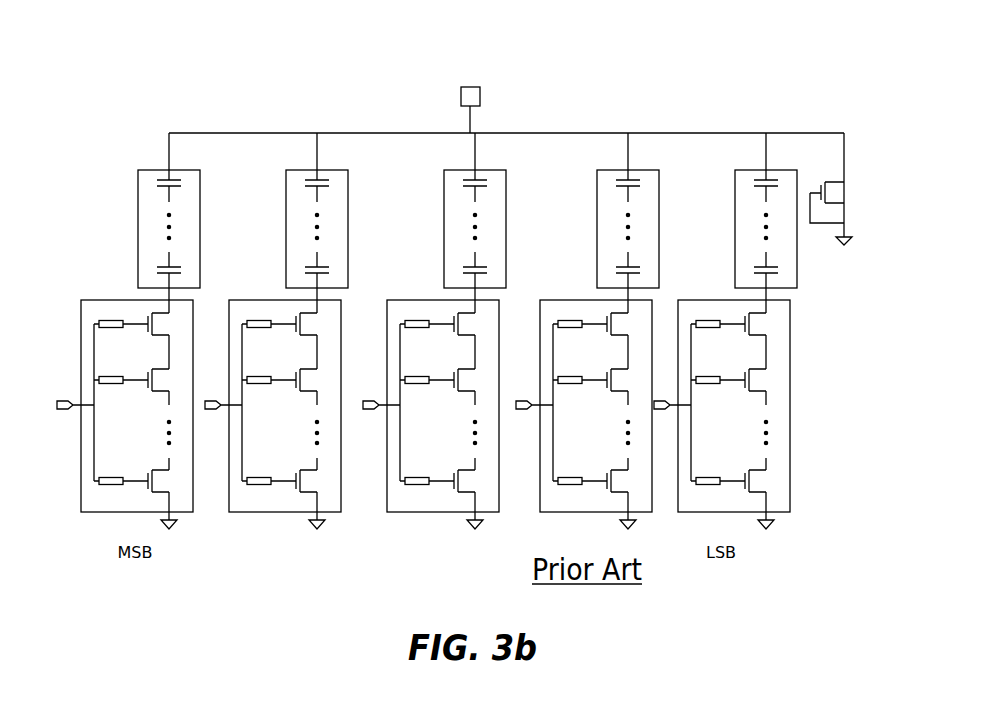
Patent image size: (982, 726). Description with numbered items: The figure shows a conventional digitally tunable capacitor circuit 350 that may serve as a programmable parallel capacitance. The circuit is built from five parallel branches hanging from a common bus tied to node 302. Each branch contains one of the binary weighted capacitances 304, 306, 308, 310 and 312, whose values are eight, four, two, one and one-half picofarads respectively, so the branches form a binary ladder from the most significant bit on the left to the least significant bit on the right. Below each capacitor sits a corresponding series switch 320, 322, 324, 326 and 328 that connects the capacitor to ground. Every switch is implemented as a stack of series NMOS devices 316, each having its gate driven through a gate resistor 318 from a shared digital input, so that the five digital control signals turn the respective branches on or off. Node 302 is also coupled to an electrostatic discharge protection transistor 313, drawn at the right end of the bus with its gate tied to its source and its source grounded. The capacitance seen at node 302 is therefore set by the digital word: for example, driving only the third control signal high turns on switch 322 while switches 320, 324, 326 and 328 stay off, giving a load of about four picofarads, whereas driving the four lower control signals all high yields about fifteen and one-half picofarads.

The node 302 is at (460, 90).
The binary weighted capacitance 304 is at (138, 170).
The binary weighted capacitance 306 is at (286, 170).
The binary weighted capacitance 308 is at (444, 170).
The binary weighted capacitance 310 is at (597, 170).
The binary weighted capacitance 312 is at (735, 170).
The electrostatic discharge protection transistor 313 is at (838, 182).
The series NMOS device 316 is at (156, 337).
The gate resistor 318 is at (116, 320).
The series switch 320 is at (117, 300).
The series switch 322 is at (265, 300).
The series switch 324 is at (423, 300).
The series switch 326 is at (576, 300).
The series switch 328 is at (714, 300).
The digitally tunable capacitor circuit 350 is at (152, 110).